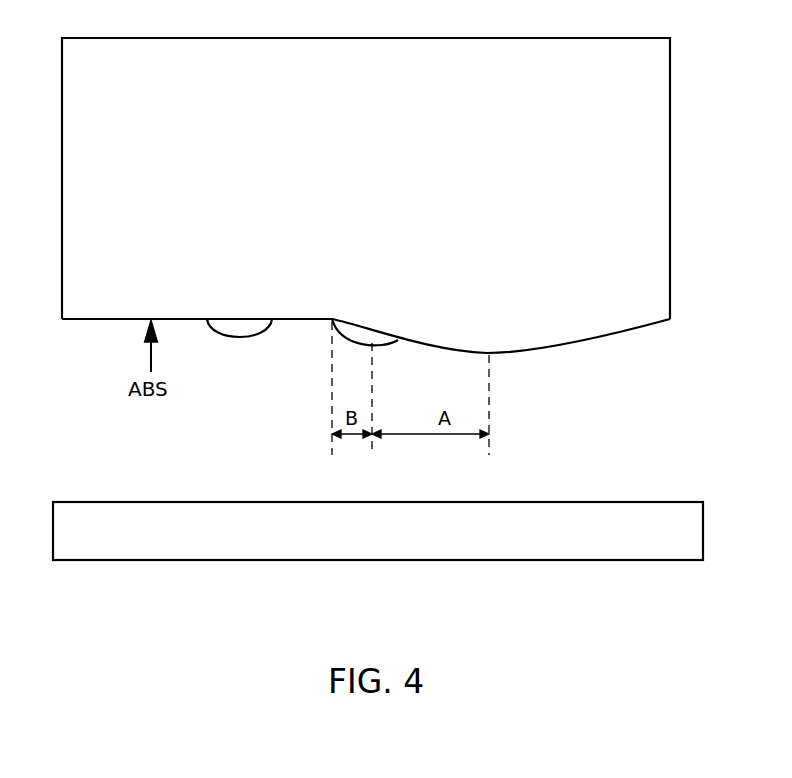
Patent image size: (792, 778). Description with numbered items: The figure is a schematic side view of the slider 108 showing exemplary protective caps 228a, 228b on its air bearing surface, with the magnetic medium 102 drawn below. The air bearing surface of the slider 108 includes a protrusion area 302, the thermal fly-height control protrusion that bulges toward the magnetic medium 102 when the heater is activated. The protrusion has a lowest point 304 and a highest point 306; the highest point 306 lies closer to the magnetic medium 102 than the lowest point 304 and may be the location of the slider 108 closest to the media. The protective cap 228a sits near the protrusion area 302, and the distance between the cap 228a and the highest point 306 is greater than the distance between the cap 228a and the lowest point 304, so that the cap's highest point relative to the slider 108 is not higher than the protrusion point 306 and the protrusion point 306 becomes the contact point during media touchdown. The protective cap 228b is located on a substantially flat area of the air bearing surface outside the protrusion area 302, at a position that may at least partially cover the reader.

The slider 108 is at (670, 92).
The magnetic medium 102 is at (690, 502).
The protective cap 228a is at (395, 342).
The protective cap 228b is at (239, 337).
The protrusion area 302 is at (567, 367).
The lowest point of the protrusion 304 is at (332, 319).
The highest point of the protrusion 306 is at (489, 353).